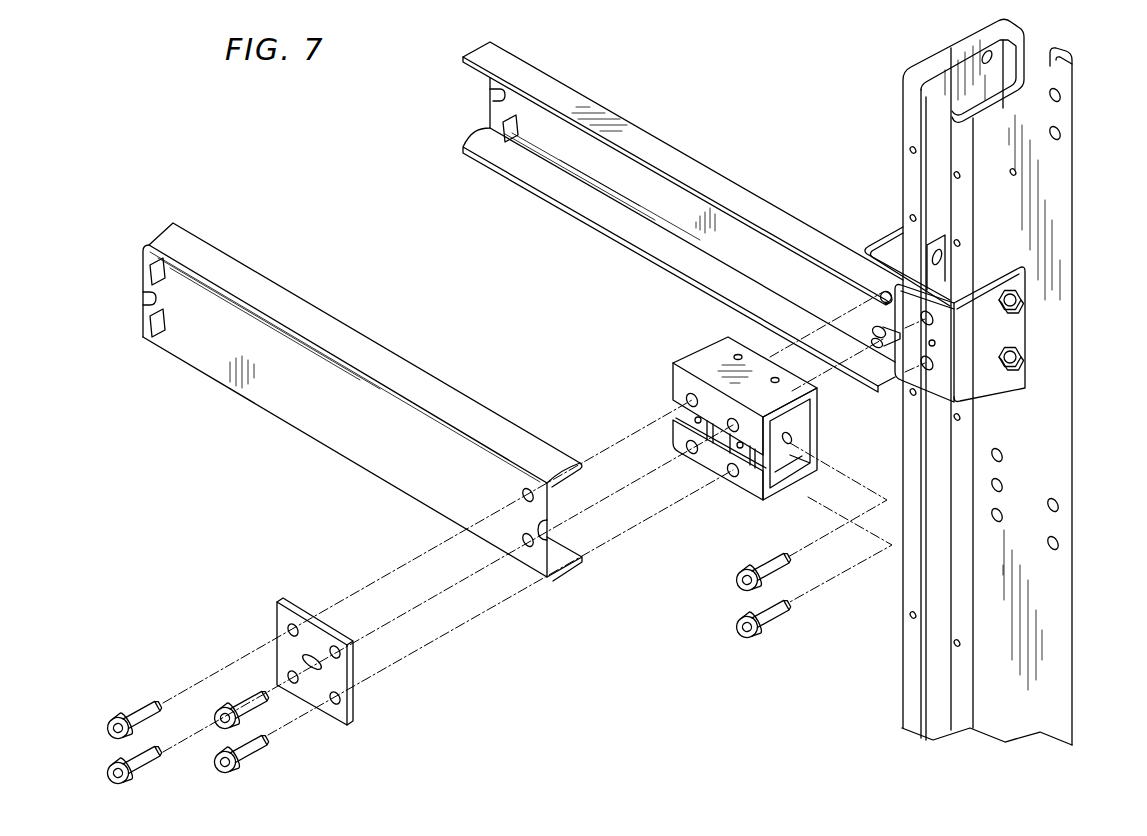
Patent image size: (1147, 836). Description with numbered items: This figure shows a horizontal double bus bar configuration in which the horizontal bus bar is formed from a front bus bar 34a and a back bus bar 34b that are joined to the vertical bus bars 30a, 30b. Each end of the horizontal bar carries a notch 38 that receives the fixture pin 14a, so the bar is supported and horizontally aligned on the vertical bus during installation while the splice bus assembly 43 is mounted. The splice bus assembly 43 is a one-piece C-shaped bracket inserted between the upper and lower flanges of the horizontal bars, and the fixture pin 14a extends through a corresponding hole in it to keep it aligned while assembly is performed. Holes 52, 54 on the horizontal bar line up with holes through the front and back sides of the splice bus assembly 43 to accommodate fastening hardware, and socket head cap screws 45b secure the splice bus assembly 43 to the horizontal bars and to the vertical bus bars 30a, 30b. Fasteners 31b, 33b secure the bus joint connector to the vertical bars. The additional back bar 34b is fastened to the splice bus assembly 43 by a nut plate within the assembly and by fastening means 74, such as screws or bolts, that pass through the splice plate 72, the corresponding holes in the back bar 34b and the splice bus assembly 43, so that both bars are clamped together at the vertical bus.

The vertical bus bar 30a is at (953, 40).
The vertical bus bar 30b is at (1074, 108).
The front bus bar 34a is at (698, 158).
The back bus bar 34b is at (239, 257).
The hole 52 is at (864, 254).
The fixture pin 14a is at (879, 300).
The hole 54 is at (875, 338).
The notch 38 is at (898, 342).
The splice bus assembly 43 is at (693, 463).
The socket head cap screw 45b is at (742, 578).
The splice plate 72 is at (277, 625).
The fastening means 74 is at (258, 753).
The fastener 31b is at (1023, 302).
The fastener 33b is at (1023, 357).